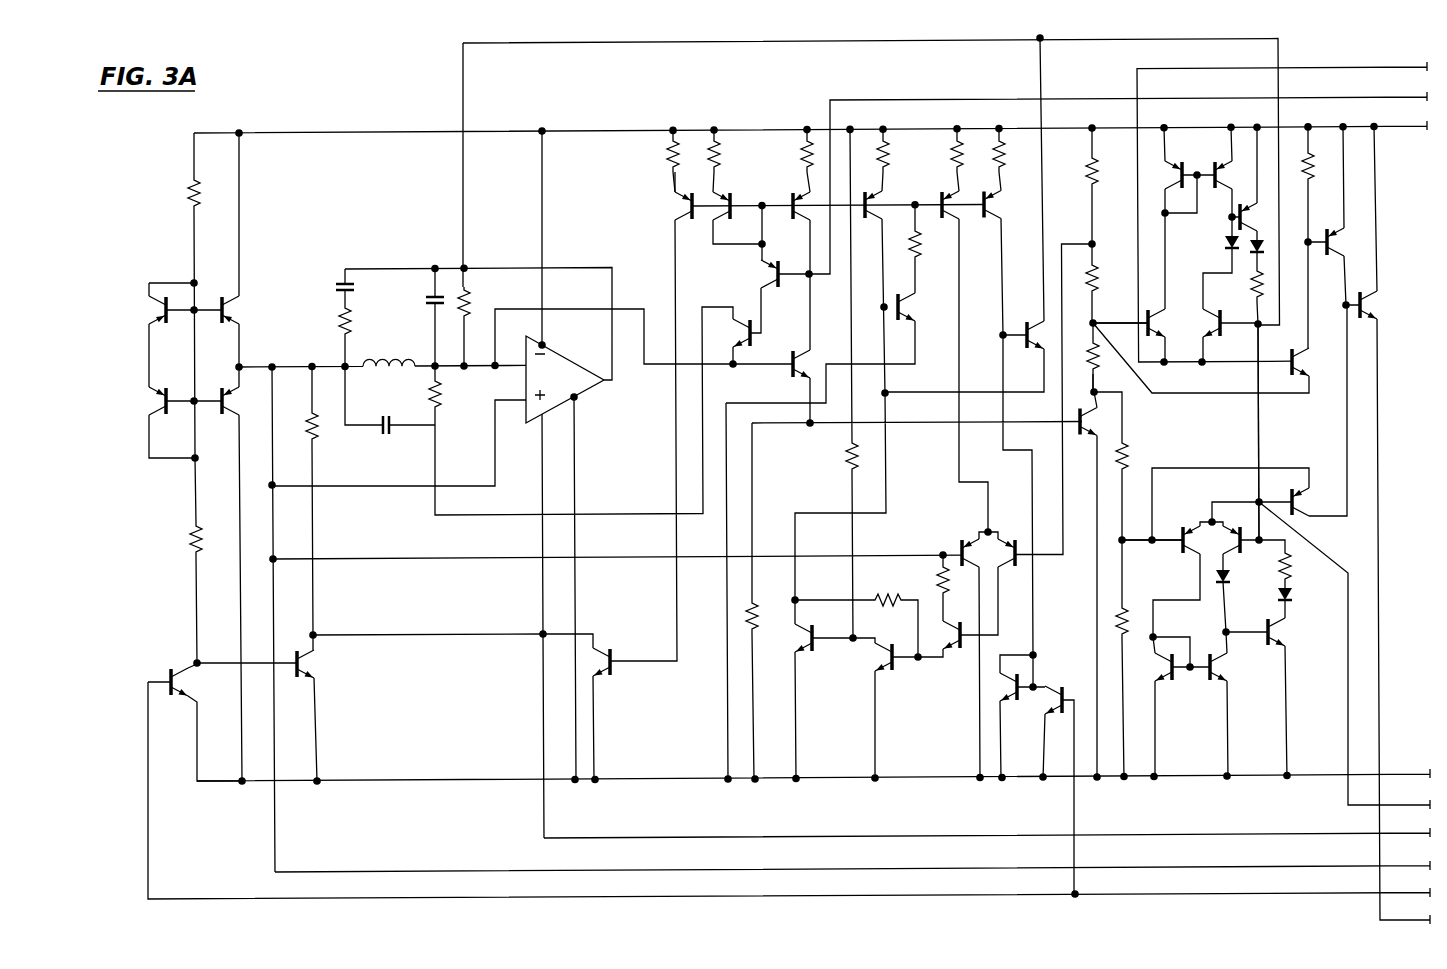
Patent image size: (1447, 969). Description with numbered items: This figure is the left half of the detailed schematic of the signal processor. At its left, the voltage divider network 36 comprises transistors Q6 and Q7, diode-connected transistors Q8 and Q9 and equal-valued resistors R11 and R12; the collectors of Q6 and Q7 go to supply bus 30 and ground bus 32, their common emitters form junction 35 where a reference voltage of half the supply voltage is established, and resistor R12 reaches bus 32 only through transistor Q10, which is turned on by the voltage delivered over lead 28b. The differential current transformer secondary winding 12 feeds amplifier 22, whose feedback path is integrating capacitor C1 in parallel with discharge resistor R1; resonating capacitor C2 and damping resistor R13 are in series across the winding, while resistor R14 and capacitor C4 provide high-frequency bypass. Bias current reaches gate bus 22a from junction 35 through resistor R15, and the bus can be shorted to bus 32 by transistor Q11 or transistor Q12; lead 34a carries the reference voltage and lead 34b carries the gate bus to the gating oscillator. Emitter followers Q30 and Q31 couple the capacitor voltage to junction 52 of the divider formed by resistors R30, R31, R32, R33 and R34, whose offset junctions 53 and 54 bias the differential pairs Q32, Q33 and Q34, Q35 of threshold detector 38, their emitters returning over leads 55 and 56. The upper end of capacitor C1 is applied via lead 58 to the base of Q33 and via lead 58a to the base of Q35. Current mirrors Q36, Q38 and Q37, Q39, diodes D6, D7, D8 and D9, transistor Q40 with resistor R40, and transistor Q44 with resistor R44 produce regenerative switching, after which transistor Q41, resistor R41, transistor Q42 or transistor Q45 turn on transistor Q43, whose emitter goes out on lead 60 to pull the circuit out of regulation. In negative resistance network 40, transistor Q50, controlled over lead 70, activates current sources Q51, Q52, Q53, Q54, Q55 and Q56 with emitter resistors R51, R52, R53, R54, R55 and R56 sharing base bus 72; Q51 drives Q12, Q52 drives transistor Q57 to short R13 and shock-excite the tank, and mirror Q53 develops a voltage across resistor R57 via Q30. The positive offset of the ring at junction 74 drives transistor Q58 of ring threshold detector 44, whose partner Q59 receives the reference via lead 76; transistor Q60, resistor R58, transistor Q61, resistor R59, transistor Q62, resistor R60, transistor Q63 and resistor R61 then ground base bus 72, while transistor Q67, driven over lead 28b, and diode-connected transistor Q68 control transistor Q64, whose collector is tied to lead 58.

The differential current transformer secondary winding 12 is at (398, 357).
The amplifier 22 is at (570, 356).
The gate bus 22a is at (404, 634).
The lead 28b is at (1387, 894).
The bus 30 is at (1386, 130).
The ground bus 32 is at (1393, 773).
The lead 34a is at (1387, 866).
The lead 34b is at (1387, 834).
The junction 35 is at (250, 366).
The voltage divider network 36 is at (184, 492).
The threshold detector 38 is at (1387, 423).
The negative resistance network 40 is at (646, 212).
The ring threshold detector 44 is at (954, 517).
The junction 52 is at (1091, 390).
The junction 53 is at (1094, 321).
The junction 54 is at (1124, 538).
The lead 55 is at (1386, 68).
The lead 56 is at (1348, 704).
The lead 58 is at (874, 43).
The lead 58a is at (1260, 437).
The lead 60 is at (1389, 705).
The lead 70 is at (1386, 101).
The base bus 72 is at (868, 223).
The junction 74 is at (1090, 242).
The lead 76 is at (610, 558).
The discharge resistor R1 is at (474, 299).
The resistor R11 is at (190, 191).
The resistor R12 is at (192, 544).
The damping resistor R13 is at (446, 392).
The resistor R14 is at (341, 322).
The resistor R15 is at (320, 436).
The resistor R30 is at (1086, 162).
The resistor R31 is at (1098, 277).
The resistor R32 is at (1098, 368).
The resistor R33 is at (1130, 453).
The resistor R34 is at (1128, 614).
The resistor R40 is at (1256, 288).
The resistor R41 is at (1310, 176).
The resistor R44 is at (1288, 568).
The resistor R51 is at (666, 154).
The resistor R52 is at (723, 155).
The resistor R53 is at (803, 166).
The resistor R54 is at (891, 155).
The resistor R55 is at (947, 164).
The resistor R56 is at (1002, 162).
The resistor R57 is at (756, 600).
The resistor R58 is at (936, 578).
The resistor R59 is at (850, 462).
The resistor R60 is at (902, 608).
The resistor R61 is at (916, 262).
The integrating capacitor C1 is at (424, 302).
The resonating capacitor C2 is at (386, 420).
The capacitor C4 is at (334, 288).
The diode D6 is at (1222, 246).
The diode D7 is at (1265, 256).
The diode D8 is at (1230, 582).
The diode D9 is at (1292, 598).
The transistor Q6 is at (231, 312).
The transistor Q7 is at (231, 403).
The diode connected transistor Q8 is at (150, 312).
The diode connected transistor Q9 is at (151, 403).
The transistor Q10 is at (164, 676).
The transistor Q11 is at (308, 664).
The transistor Q12 is at (634, 668).
The emitter follower transistor Q30 is at (806, 368).
The emitter follower transistor Q31 is at (1084, 424).
The transistor Q32 is at (1152, 318).
The transistor Q33 is at (1224, 334).
The transistor Q34 is at (1178, 554).
The transistor Q35 is at (1233, 548).
The diode connected transistor Q36 is at (1178, 178).
The diode connected transistor Q37 is at (1164, 692).
The transistor Q38 is at (1224, 164).
The transistor Q39 is at (1228, 676).
The transistor Q40 is at (1246, 204).
The transistor Q41 is at (1305, 360).
The transistor Q42 is at (1335, 242).
The transistor Q43 is at (1372, 306).
The transistor Q44 is at (1286, 634).
The transistor Q45 is at (1303, 498).
The transistor Q50 is at (765, 277).
The transistor Q51 is at (678, 208).
The transistor Q52 is at (737, 192).
The transistor Q53 is at (788, 224).
The transistor Q54 is at (879, 206).
The transistor Q55 is at (956, 222).
The transistor Q56 is at (998, 209).
The transistor Q57 is at (746, 337).
The transistor Q58 is at (1008, 532).
The transistor Q59 is at (964, 542).
The transistor Q60 is at (956, 664).
The transistor Q61 is at (876, 662).
The transistor Q62 is at (804, 645).
The transistor Q63 is at (910, 314).
The transistor Q64 is at (1034, 320).
The transistor Q67 is at (1058, 686).
The transistor Q68 is at (1014, 708).